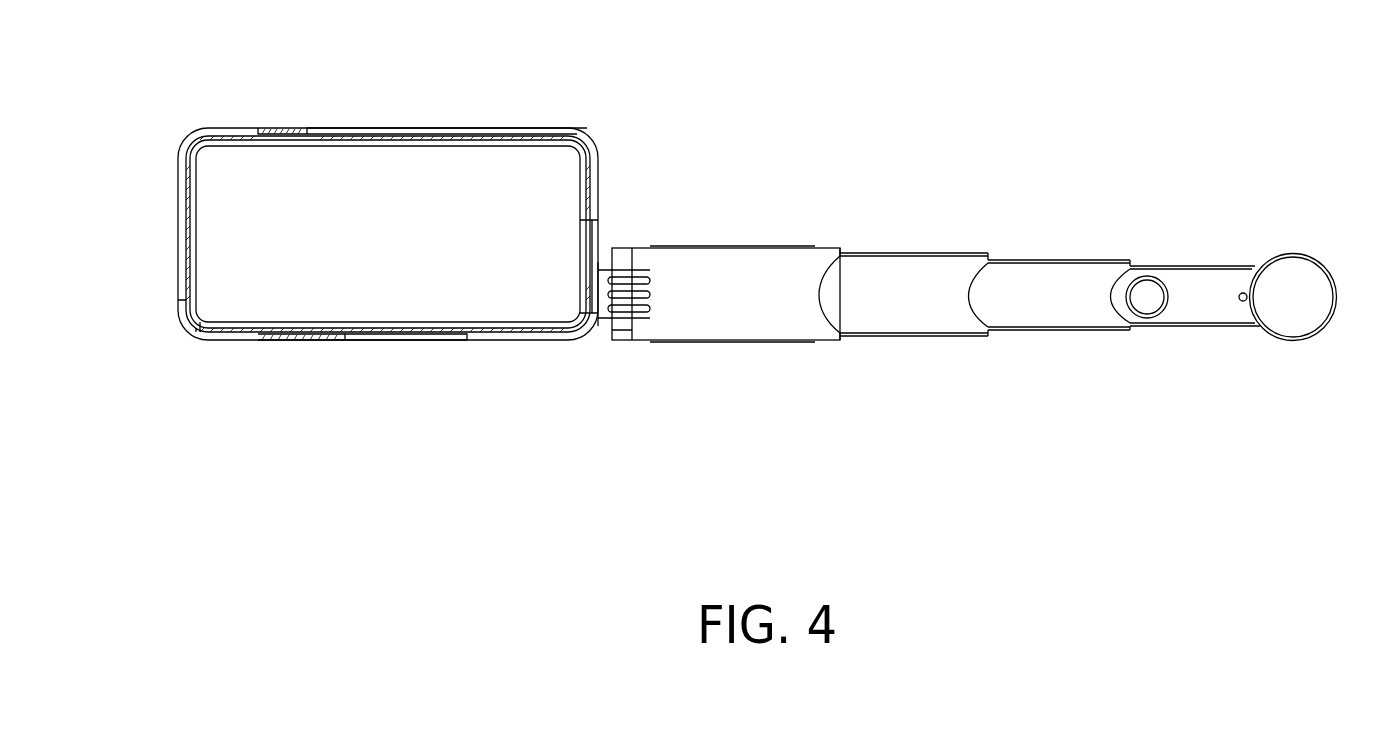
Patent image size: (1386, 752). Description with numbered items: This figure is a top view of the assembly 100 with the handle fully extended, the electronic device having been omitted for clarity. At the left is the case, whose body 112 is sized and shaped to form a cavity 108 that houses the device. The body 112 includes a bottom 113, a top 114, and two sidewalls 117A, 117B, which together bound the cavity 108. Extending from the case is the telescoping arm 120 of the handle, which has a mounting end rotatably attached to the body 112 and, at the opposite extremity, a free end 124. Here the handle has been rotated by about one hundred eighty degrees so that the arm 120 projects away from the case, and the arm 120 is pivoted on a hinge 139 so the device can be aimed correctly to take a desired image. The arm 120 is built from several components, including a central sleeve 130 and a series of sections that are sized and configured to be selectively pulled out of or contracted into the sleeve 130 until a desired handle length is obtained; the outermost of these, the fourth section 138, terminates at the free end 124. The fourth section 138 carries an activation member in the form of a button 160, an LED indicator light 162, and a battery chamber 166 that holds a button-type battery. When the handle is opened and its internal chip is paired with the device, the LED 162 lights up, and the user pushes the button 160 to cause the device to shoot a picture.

The assembly 100 is at (898, 246).
The cavity 108 is at (500, 167).
The body 112 is at (367, 342).
The bottom 113 is at (597, 187).
The top 114 is at (180, 312).
The sidewall 117A is at (322, 131).
The sidewall 117B is at (467, 334).
The telescoping arm 120 is at (678, 345).
The central sleeve 130 is at (868, 338).
The fourth section 138 is at (1158, 330).
The hinge 139 is at (616, 340).
The button 160 is at (1155, 290).
The LED indicator light 162 is at (1241, 292).
The free end 124 is at (1327, 270).
The battery chamber 166 is at (1292, 287).